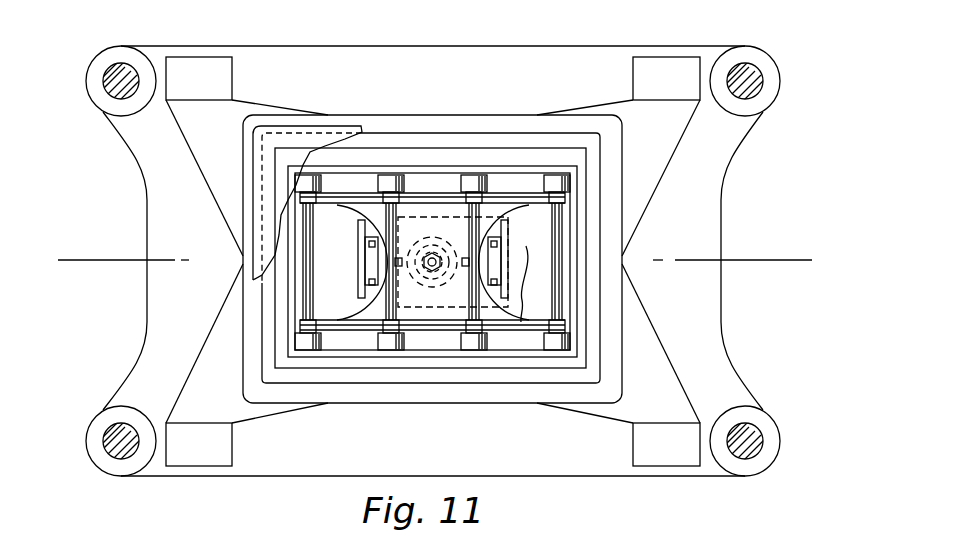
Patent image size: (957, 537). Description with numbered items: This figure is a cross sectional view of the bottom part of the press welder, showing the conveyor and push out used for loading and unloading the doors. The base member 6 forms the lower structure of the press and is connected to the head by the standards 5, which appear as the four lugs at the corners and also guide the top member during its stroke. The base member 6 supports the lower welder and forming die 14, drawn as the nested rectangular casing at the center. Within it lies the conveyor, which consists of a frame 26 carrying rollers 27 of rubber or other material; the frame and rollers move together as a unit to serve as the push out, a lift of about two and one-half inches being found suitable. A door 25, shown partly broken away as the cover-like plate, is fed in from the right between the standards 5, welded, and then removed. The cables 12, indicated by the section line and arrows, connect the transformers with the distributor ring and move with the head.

The standards 5 is at (120, 74).
The base member 6 is at (707, 320).
The cables 12 is at (82, 245).
The lower welder and forming die 14 is at (611, 232).
The door 25 is at (305, 147).
The frame 26 is at (523, 198).
The rollers 27 is at (297, 179).